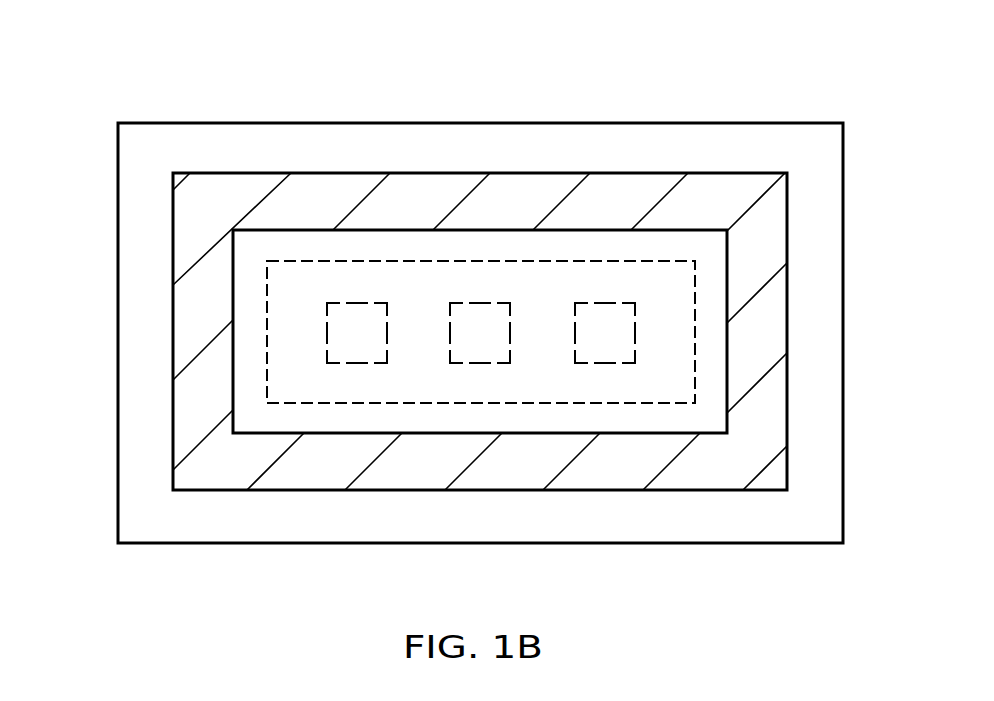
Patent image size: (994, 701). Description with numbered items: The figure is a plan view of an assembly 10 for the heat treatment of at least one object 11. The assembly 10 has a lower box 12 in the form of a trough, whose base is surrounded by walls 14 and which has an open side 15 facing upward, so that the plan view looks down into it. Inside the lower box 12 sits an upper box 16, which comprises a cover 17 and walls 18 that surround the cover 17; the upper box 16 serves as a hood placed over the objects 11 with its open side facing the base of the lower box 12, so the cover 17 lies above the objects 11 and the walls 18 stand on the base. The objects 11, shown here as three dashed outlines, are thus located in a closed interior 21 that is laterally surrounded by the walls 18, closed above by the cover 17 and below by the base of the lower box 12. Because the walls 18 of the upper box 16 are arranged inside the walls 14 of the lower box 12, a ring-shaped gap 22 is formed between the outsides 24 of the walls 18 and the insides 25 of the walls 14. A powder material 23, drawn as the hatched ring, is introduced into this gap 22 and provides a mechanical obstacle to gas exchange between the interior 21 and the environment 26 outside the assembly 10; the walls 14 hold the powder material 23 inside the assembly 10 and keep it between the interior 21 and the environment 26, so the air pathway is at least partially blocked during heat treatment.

The assembly 10 is at (215, 117).
The object 11 is at (343, 344).
The lower box 12 is at (847, 161).
The walls 14 is at (822, 312).
The open side 15 is at (726, 171).
The upper box 16 is at (490, 257).
The cover 17 is at (667, 388).
The walls 18 is at (713, 383).
The interior 21 is at (432, 300).
The gap 22 is at (210, 285).
The powder material 23 is at (362, 200).
The outsides 24 is at (231, 378).
The insides 25 is at (178, 340).
The environment 26 is at (658, 29).